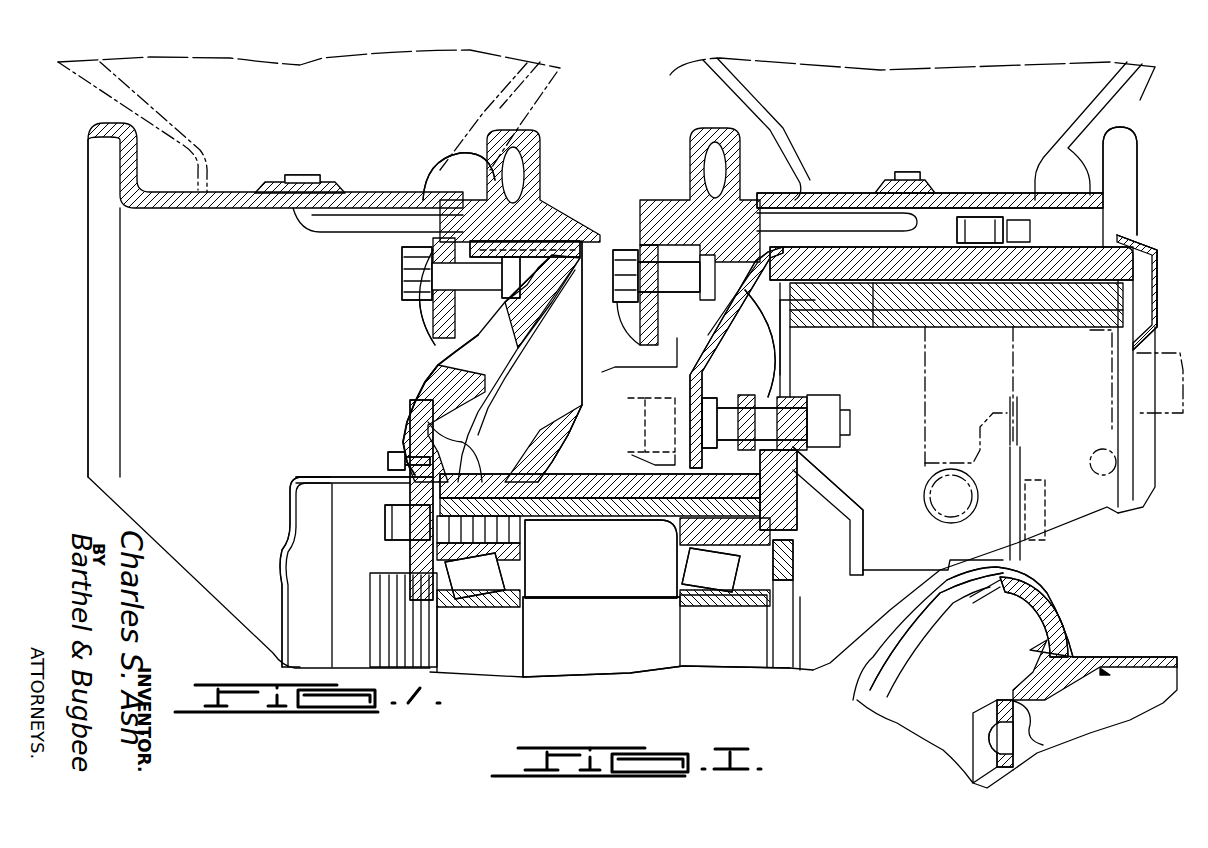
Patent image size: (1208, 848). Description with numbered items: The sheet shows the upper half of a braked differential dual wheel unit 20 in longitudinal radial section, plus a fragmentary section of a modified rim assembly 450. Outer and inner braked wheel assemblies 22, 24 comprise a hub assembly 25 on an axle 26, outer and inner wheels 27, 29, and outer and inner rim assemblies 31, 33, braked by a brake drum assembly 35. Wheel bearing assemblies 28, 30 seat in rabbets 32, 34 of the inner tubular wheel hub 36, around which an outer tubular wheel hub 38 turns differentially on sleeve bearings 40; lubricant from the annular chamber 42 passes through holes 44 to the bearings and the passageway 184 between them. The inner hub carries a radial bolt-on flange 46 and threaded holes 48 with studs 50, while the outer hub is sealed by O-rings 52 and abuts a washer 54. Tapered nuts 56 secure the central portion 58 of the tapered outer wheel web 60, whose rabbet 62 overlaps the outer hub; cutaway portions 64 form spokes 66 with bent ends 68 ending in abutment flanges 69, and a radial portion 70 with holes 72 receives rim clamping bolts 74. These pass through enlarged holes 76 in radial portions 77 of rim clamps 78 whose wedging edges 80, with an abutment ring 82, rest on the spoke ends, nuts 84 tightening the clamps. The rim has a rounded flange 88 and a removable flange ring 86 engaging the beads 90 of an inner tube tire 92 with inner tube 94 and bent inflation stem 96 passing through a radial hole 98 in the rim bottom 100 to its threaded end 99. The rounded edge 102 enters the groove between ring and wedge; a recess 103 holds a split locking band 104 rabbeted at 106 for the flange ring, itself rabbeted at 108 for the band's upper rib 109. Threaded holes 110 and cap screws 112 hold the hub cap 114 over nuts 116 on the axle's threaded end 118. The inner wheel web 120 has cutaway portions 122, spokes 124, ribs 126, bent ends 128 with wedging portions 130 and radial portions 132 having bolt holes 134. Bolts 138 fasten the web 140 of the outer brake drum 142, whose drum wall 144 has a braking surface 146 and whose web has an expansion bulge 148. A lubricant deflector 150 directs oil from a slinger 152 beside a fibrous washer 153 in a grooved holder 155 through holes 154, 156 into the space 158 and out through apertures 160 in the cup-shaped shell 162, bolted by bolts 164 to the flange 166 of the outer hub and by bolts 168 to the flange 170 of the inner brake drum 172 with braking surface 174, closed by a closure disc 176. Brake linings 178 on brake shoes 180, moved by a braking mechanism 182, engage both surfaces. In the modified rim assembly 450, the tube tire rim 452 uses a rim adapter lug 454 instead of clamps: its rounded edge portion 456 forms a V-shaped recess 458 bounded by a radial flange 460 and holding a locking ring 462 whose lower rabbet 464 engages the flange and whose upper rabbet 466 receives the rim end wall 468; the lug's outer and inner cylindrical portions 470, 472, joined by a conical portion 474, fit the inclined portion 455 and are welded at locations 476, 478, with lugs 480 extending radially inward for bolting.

In FIG. 1, the braked differential dual wheel unit 20 is at (645, 72).
In FIG. 1, the outer braked wheel assembly 22 is at (85, 168).
In FIG. 1, the inner braked wheel assembly 24 is at (1140, 150).
In FIG. 1, the hub assembly 25 is at (405, 562).
In FIG. 1, the axle 26 is at (633, 675).
In FIG. 1, the outer wheel 27 is at (412, 372).
In FIG. 1, the wheel bearing assembly 28 is at (510, 575).
In FIG. 1, the inner wheel 29 is at (578, 405).
In FIG. 1, the wheel bearing assembly 30 is at (690, 568).
In FIG. 1, the outer rim assembly 31 is at (115, 212).
In FIG. 1, the annular seat 32 is at (515, 562).
In FIG. 1, the inner rim assembly 33 is at (1108, 200).
In FIG. 1, the annular seat 34 is at (690, 540).
In FIG. 1, the brake drum assembly 35 is at (1185, 275).
In FIG. 1, the inner tubular wheel hub 36 is at (640, 525).
In FIG. 1, the outer tubular wheel hub 38 is at (530, 472).
In FIG. 1, the sleeve bearings 40 is at (510, 495).
In FIG. 1, the annular chamber 42 is at (612, 582).
In FIG. 1, the peripherally-spaced holes 44 is at (568, 520).
In FIG. 1, the radial bolt-on flange 46 is at (780, 380).
In FIG. 1, the threaded holes 48 is at (518, 548).
In FIG. 1, the threaded studs 50 is at (385, 522).
In FIG. 1, the O-rings 52 is at (465, 465).
In FIG. 1, the washer 54 is at (455, 470).
In FIG. 1, the tapered nuts 56 is at (395, 548).
In FIG. 1, the central portion 58 is at (410, 490).
In FIG. 1, the outer wheel web 60 is at (405, 405).
In FIG. 1, the annular rabbet 62 is at (470, 470).
In FIG. 1, the cutaway portions 64 is at (510, 342).
In FIG. 1, the spokes 66 is at (432, 352).
In FIG. 1, the bent outer ends 68 is at (535, 263).
In FIG. 1, the angled abutment flange 69 is at (560, 242).
In FIG. 1, the annular radial portion 70 is at (500, 315).
In FIG. 1, the holes 72 is at (485, 335).
In FIG. 1, the rim clamping bolts 74 is at (400, 268).
In FIG. 1, the enlarged holes 76 is at (435, 258).
In FIG. 1, the radial portions 77 is at (420, 300).
In FIG. 1, the rim clamps 78 is at (670, 230).
In FIG. 1, the wedging inner edges 80 is at (505, 262).
In FIG. 1, the abutment ring 82 is at (530, 232).
In FIG. 1, the nuts 84 is at (400, 262).
In FIG. 1, the removable flange ring 86 is at (545, 148).
In FIG. 1, the rounded flange 88 is at (120, 175).
In FIG. 1, the beads 90 is at (178, 165).
In FIG. 1, the inner tube tire 92 is at (68, 75).
In FIG. 1, the inner tube 94 is at (180, 122).
In FIG. 1, the inflation stem 96 is at (360, 225).
In FIG. 1, the radial hole 98 is at (305, 210).
In FIG. 1, the externally-threaded end 99 is at (655, 235).
In FIG. 1, the rim bottom 100 is at (255, 200).
In FIG. 1, the rounded inner edge portion 102 is at (560, 225).
In FIG. 1, the recess 103 is at (535, 200).
In FIG. 1, the split locking band 104 is at (442, 190).
In FIG. 1, the rabbet 106 is at (530, 215).
In FIG. 1, the rabbet 108 is at (538, 168).
In FIG. 1, the upper rib 109 is at (560, 190).
In FIG. 1, the threaded holes 110 is at (405, 425).
In FIG. 1, the cap screws 112 is at (385, 462).
In FIG. 1, the hub cap 114 is at (295, 540).
In FIG. 1, the nuts 116 is at (395, 590).
In FIG. 1, the threaded end 118 is at (388, 607).
In FIG. 1, the inner wheel web 120 is at (550, 415).
In FIG. 1, the cutaway portions 122 is at (590, 350).
In FIG. 1, the spokes 124 is at (650, 320).
In FIG. 1, the arcuate integral ribs 126 is at (672, 372).
In FIG. 1, the axially-bent ends 128 is at (700, 240).
In FIG. 1, the wedging portions 130 is at (740, 200).
In FIG. 1, the radial portions 132 is at (735, 332).
In FIG. 1, the bolt holes 134 is at (650, 262).
In FIG. 1, the bolts 138 is at (848, 420).
In FIG. 1, the web 140 is at (790, 355).
In FIG. 1, the outer brake drum 142 is at (800, 292).
In FIG. 1, the drum wall 144 is at (880, 292).
In FIG. 1, the internal braking surface 146 is at (850, 328).
In FIG. 1, the annular expansion bulge 148 is at (790, 328).
In FIG. 1, the lubricant deflector 150 is at (840, 493).
In FIG. 1, the radial slinger 152 is at (860, 530).
In FIG. 1, the fibrous washer 153 is at (795, 560).
In FIG. 1, the holes 154 is at (805, 460).
In FIG. 1, the grooved holder 155 is at (795, 580).
In FIG. 1, the holes 156 is at (750, 470).
In FIG. 1, the space 158 is at (765, 360).
In FIG. 1, the apertures 160 is at (860, 262).
In FIG. 1, the cup-shaped shell 162 is at (690, 352).
In FIG. 1, the bolts 164 is at (675, 400).
In FIG. 1, the radial bolt-on flange 166 is at (670, 425).
In FIG. 1, the bolts 168 is at (1030, 215).
In FIG. 1, the radial flange 170 is at (985, 215).
In FIG. 1, the inner brake drum 172 is at (1075, 250).
In FIG. 1, the internal braking surface 174 is at (1060, 292).
In FIG. 1, the closure disc 176 is at (1160, 240).
In FIG. 1, the brake linings 178 is at (1035, 328).
In FIG. 1, the brake shoes 180 is at (1005, 330).
In FIG. 1, the braking mechanism 182 is at (930, 380).
In FIG. 1, the annular lubricant chamber 184 is at (580, 490).
In FIG. 7, the modified rim assembly 450 is at (1080, 622).
In FIG. 7, the tube tire rim 452 is at (1170, 655).
In FIG. 7, the rim adapter lug 454 is at (1063, 703).
In FIG. 7, the inclined portion 455 is at (1070, 657).
In FIG. 7, the rounded edge portion 456 is at (1017, 670).
In FIG. 7, the annular external recess 458 is at (1070, 643).
In FIG. 7, the radial flange 460 is at (1030, 675).
In FIG. 7, the removable locking ring 462 is at (968, 618).
In FIG. 7, the lower annular rabbet 464 is at (1043, 657).
In FIG. 7, the upper annular rabbet 466 is at (1062, 623).
In FIG. 7, the demountable rim end wall 468 is at (1025, 577).
In FIG. 7, the outer axial cylindrical portion 470 is at (1027, 715).
In FIG. 7, the inner axial cylindrical portion 472 is at (1077, 680).
In FIG. 7, the conical portion 474 is at (1057, 683).
In FIG. 7, the welding location 476 is at (1015, 697).
In FIG. 7, the welding location 478 is at (1103, 663).
In FIG. 7, the lugs 480 is at (983, 757).